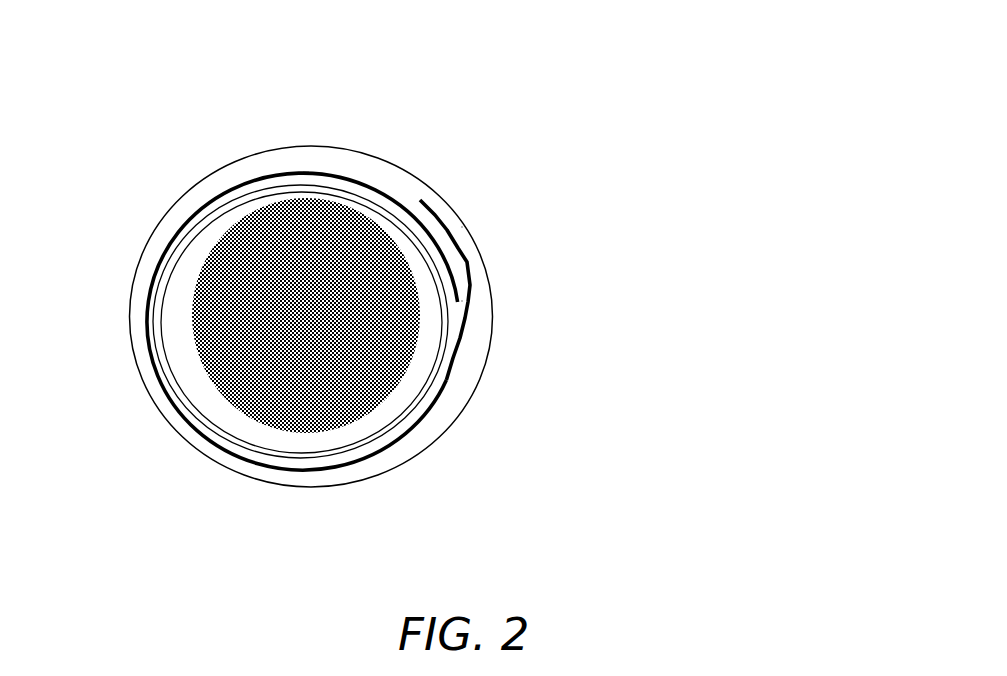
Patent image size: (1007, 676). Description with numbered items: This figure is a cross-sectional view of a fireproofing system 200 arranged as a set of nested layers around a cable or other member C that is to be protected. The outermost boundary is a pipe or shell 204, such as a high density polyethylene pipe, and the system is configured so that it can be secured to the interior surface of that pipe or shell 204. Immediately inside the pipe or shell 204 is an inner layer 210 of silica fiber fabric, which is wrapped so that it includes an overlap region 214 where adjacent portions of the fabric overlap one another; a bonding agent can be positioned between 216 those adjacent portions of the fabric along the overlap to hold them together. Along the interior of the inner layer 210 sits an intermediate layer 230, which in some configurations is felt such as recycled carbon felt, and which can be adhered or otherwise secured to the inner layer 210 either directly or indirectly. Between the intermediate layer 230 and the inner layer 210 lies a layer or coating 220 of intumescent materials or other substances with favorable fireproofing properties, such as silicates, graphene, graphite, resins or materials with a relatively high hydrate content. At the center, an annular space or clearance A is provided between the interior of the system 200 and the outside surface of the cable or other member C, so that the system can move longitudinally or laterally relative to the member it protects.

The fireproofing system 200 is at (749, 81).
The pipe or shell 204 is at (460, 228).
The inner layer 210 is at (452, 373).
The overlap region 214 is at (440, 214).
The bonding agent position 216 is at (456, 260).
The layer or coating 220 is at (177, 238).
The intermediate layer 230 is at (373, 197).
The annular space or clearance A is at (186, 326).
The cable or other member C is at (305, 196).